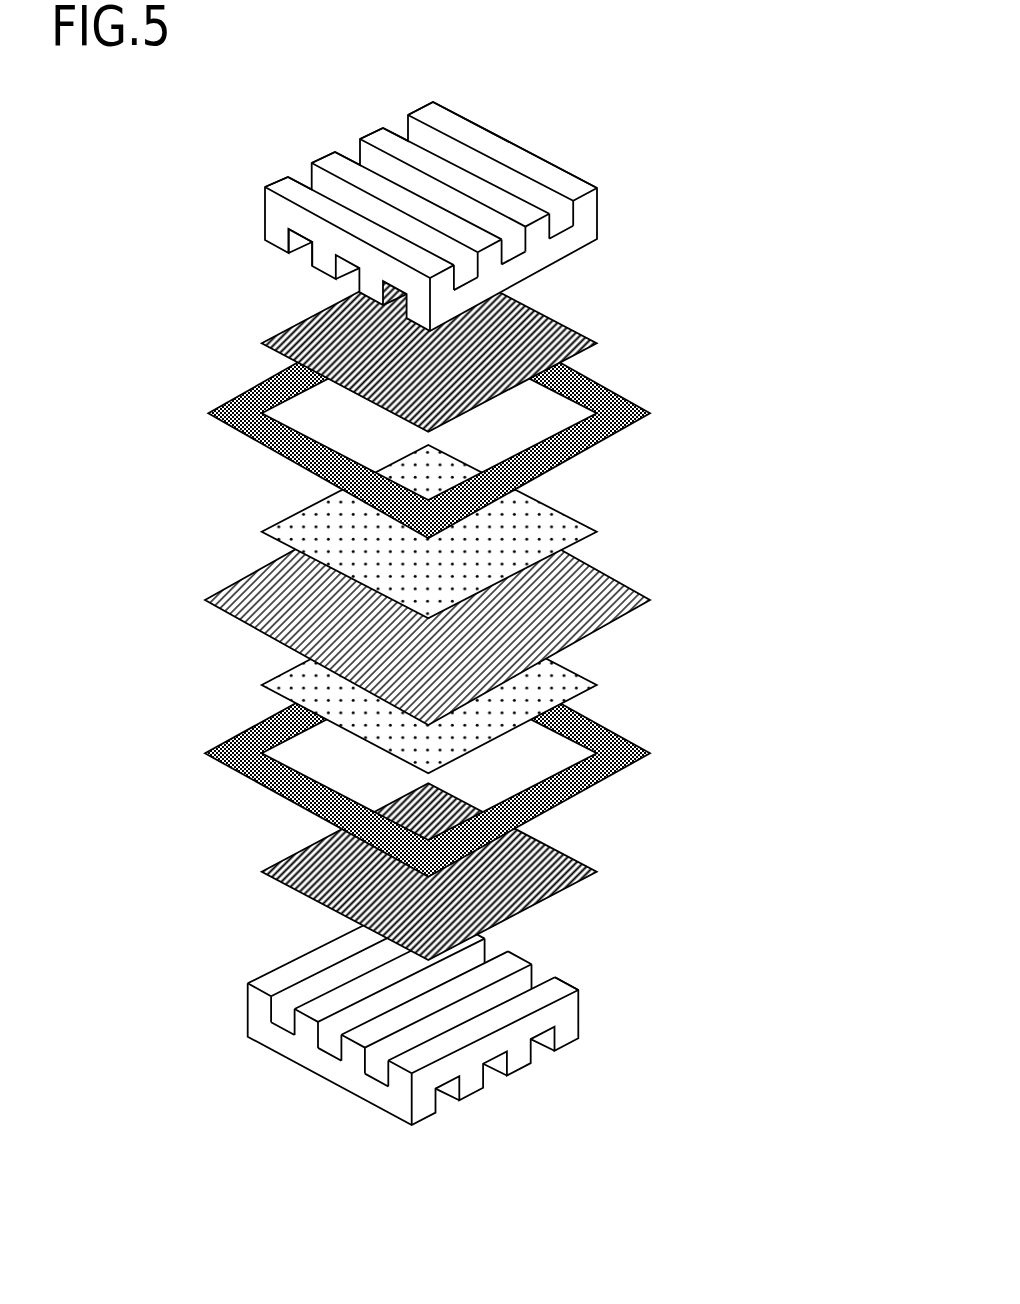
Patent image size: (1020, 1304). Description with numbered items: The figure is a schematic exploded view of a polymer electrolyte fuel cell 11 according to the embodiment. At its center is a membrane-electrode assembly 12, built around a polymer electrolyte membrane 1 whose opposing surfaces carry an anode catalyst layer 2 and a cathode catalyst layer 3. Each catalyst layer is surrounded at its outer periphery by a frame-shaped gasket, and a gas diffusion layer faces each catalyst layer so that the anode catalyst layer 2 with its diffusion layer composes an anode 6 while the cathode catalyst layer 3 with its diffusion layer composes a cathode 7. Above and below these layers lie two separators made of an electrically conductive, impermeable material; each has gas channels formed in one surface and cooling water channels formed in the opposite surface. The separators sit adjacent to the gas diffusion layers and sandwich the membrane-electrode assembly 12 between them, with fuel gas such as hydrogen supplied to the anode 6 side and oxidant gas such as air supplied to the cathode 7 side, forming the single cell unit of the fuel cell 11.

The polymer electrolyte membrane 1 is at (633, 599).
The anode catalyst layer 2 is at (577, 532).
The cathode catalyst layer 3 is at (575, 687).
The anode 6 is at (502, 436).
The cathode 7 is at (501, 778).
The polymer electrolyte fuel cell 11 is at (485, 183).
The membrane-electrode assembly 12 is at (542, 607).